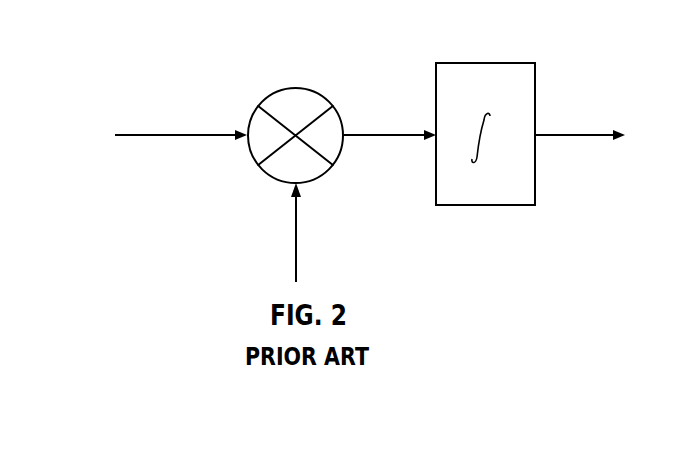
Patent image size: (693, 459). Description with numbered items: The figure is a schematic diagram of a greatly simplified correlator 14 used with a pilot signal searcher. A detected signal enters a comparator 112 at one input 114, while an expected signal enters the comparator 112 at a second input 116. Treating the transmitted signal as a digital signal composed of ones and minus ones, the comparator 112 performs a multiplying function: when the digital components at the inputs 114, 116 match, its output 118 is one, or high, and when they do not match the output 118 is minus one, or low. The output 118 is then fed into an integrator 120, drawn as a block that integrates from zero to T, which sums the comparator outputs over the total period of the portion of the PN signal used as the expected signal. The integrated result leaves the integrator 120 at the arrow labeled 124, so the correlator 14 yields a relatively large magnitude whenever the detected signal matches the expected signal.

The correlator 14 is at (573, 278).
The comparator 112 is at (287, 80).
The input 114 is at (154, 130).
The input 116 is at (289, 235).
The output 118 is at (357, 126).
The integrator 120 is at (474, 54).
The integrator output signal 124 is at (547, 121).